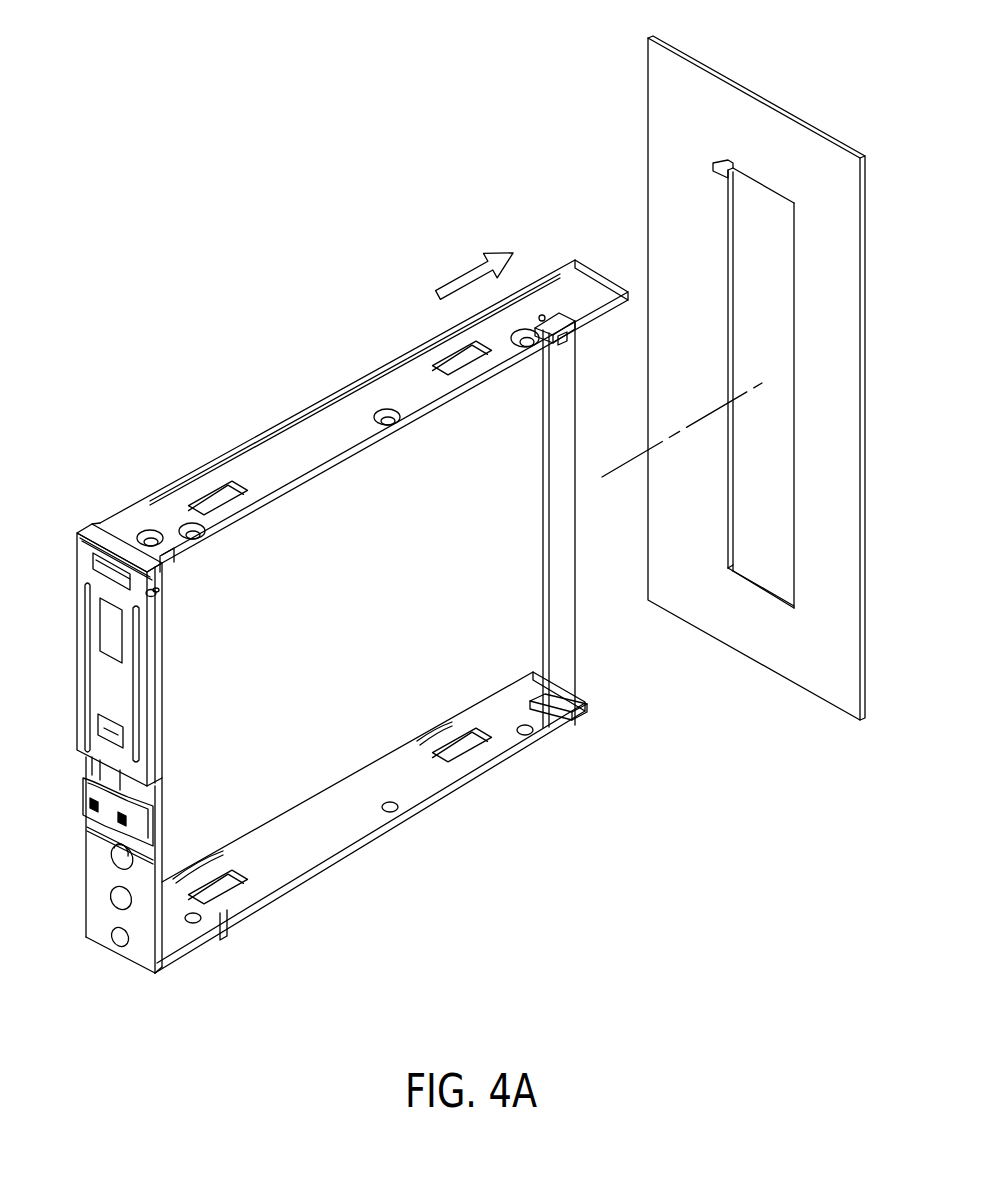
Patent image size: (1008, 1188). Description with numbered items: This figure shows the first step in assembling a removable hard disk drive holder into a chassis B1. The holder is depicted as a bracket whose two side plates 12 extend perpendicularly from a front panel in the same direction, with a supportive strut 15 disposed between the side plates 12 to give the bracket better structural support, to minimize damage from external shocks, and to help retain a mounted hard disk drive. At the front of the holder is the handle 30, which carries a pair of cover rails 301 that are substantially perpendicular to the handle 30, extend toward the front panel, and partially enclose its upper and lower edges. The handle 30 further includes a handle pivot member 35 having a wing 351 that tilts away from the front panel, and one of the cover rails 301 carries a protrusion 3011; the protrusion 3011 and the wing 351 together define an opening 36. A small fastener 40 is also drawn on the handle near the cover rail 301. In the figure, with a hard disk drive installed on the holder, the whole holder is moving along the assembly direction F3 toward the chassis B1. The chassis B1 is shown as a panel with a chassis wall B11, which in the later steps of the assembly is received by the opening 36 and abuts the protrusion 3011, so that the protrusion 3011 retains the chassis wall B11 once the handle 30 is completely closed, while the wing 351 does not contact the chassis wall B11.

The side plate 12 is at (298, 452).
The supportive strut 15 is at (562, 627).
The handle 30 is at (163, 732).
The cover rail 301 is at (158, 682).
The protrusion 3011 is at (151, 558).
The handle pivot member 35 is at (116, 450).
The wing 351 is at (113, 557).
The opening 36 is at (145, 532).
The fastener clip 40 is at (156, 594).
The chassis B1 is at (664, 134).
The chassis wall B11 is at (766, 180).
The assembly direction F3 is at (474, 274).